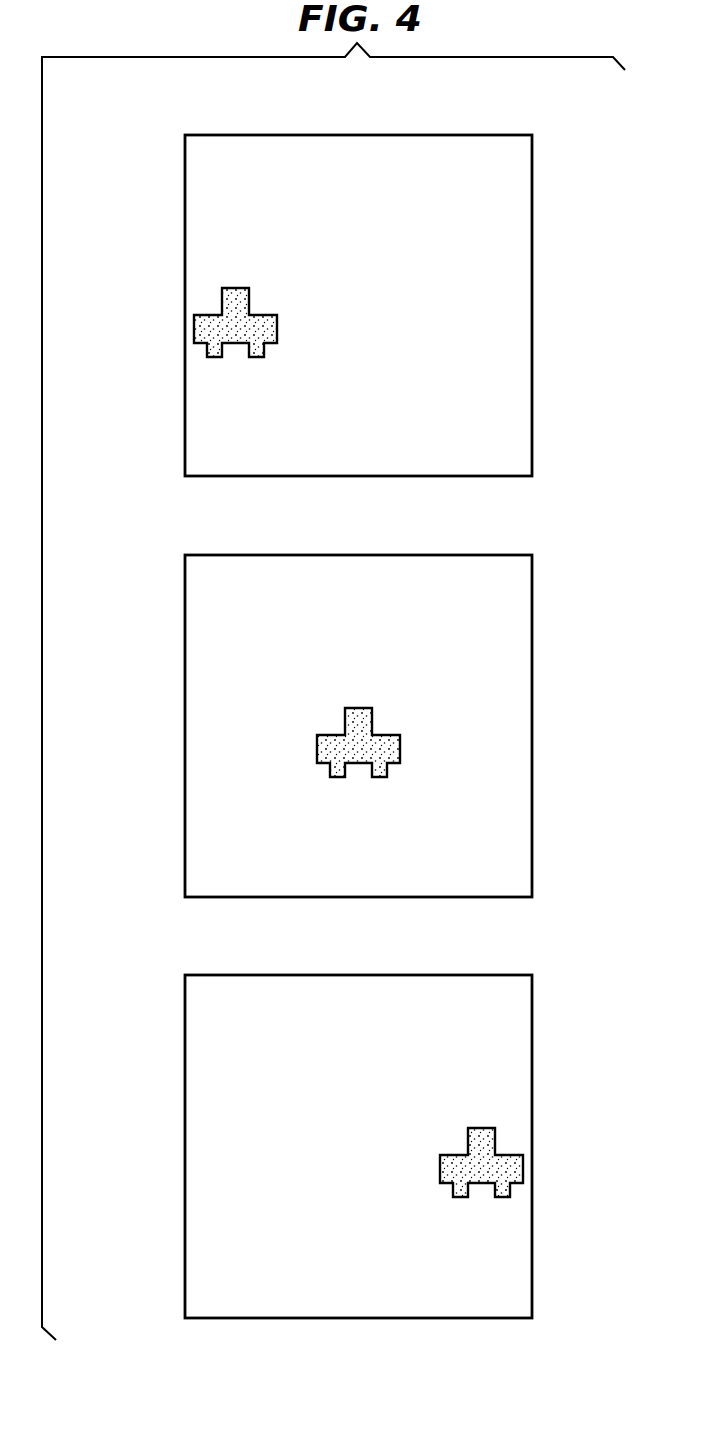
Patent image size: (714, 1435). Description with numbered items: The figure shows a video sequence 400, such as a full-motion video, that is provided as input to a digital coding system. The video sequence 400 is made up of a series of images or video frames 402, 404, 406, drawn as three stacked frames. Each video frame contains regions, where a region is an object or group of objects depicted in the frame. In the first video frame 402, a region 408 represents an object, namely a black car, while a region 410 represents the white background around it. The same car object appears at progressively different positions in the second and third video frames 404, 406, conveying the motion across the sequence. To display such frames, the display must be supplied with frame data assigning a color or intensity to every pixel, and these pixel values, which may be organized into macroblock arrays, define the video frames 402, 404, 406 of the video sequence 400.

The video sequence 400 is at (446, 113).
The video frame 402 is at (186, 253).
The video frame 404 is at (185, 673).
The video frame 406 is at (185, 1093).
The region 408 is at (238, 288).
The region 410 is at (232, 397).